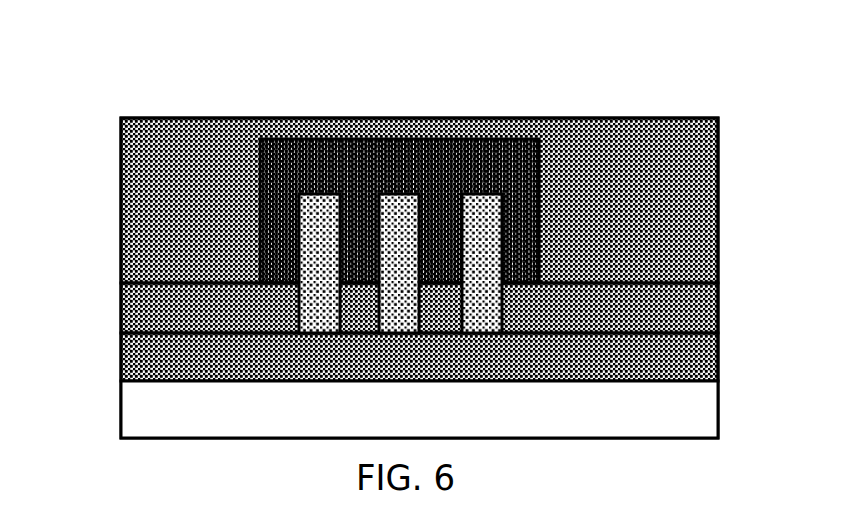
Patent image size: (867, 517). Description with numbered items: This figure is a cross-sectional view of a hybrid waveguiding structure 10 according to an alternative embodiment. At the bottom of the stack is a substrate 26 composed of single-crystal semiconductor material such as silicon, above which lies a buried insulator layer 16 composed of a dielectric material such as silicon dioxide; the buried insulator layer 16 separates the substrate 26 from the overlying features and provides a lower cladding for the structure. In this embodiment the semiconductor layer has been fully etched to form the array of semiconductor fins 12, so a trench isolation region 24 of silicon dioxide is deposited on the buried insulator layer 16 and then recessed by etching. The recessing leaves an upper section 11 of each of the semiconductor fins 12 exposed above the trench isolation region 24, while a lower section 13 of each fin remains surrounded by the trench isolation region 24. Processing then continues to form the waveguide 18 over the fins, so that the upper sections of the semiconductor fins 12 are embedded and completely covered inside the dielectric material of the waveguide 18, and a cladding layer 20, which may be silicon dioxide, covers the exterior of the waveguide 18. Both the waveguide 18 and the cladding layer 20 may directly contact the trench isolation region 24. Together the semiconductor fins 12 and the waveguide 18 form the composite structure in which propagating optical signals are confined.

The hybrid waveguiding structure 10 is at (126, 76).
The upper section 11 is at (805, 185).
The semiconductor fins 12 is at (300, 258).
The lower section 13 is at (780, 275).
The buried insulator layer 16 is at (692, 356).
The waveguide 18 is at (300, 163).
The cladding layer 20 is at (673, 134).
The trench isolation region 24 is at (145, 307).
The substrate 26 is at (128, 408).